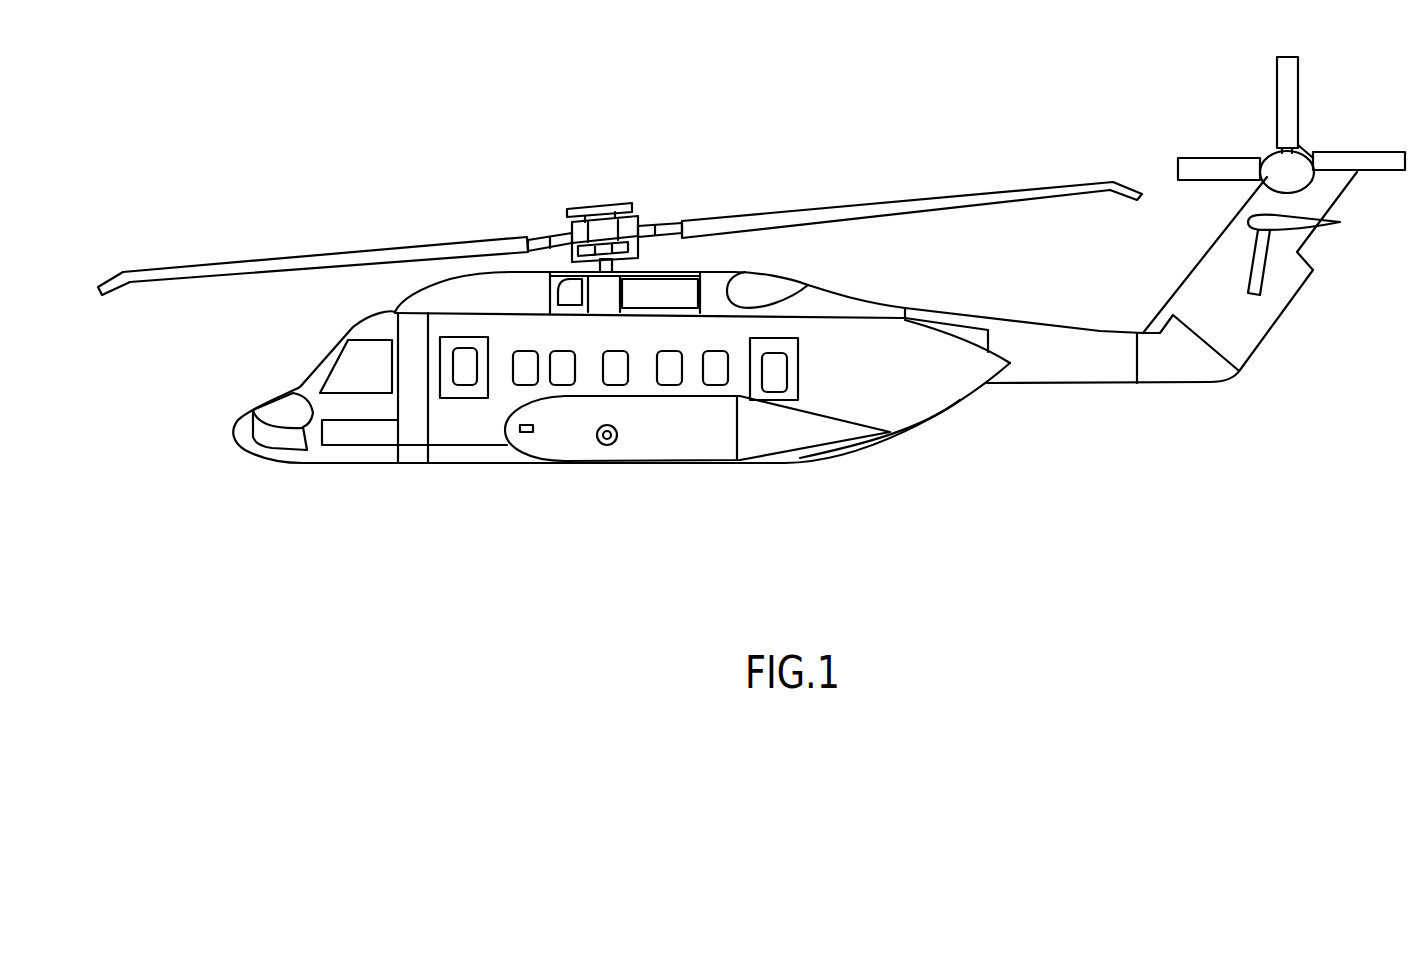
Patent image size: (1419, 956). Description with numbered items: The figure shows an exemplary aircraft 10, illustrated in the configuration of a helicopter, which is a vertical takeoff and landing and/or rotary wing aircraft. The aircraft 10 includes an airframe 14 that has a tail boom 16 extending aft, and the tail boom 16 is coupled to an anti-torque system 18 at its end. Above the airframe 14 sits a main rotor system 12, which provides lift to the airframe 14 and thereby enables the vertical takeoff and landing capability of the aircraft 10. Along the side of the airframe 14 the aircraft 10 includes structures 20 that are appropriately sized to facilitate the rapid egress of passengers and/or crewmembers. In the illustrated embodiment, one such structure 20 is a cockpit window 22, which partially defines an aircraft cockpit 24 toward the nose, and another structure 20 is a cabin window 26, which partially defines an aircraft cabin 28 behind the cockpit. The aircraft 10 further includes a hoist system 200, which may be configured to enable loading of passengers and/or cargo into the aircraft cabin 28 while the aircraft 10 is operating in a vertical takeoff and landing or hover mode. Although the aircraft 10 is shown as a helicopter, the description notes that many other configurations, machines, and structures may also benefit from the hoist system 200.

The aircraft 10 is at (796, 124).
The main rotor system 12 is at (382, 255).
The airframe 14 is at (493, 457).
The tail boom 16 is at (1073, 365).
The anti-torque system 18 is at (1332, 117).
The structures 20 is at (441, 404).
The cockpit window 22 is at (352, 385).
The aircraft cockpit 24 is at (335, 440).
The cabin window 26 is at (466, 383).
The aircraft cabin 28 is at (586, 378).
The hoist system 200 is at (930, 420).